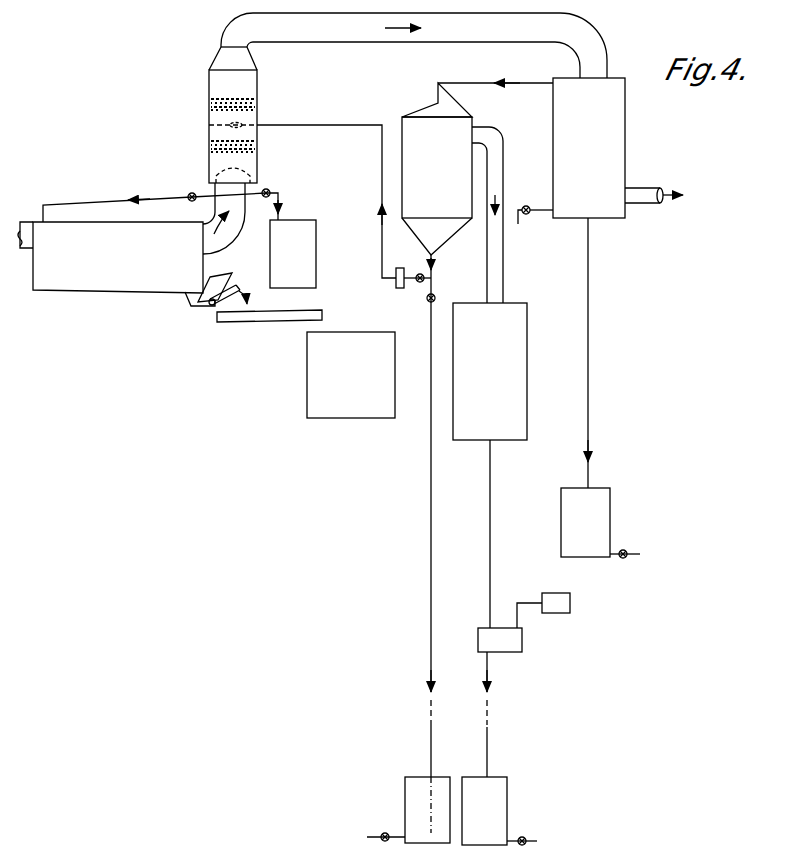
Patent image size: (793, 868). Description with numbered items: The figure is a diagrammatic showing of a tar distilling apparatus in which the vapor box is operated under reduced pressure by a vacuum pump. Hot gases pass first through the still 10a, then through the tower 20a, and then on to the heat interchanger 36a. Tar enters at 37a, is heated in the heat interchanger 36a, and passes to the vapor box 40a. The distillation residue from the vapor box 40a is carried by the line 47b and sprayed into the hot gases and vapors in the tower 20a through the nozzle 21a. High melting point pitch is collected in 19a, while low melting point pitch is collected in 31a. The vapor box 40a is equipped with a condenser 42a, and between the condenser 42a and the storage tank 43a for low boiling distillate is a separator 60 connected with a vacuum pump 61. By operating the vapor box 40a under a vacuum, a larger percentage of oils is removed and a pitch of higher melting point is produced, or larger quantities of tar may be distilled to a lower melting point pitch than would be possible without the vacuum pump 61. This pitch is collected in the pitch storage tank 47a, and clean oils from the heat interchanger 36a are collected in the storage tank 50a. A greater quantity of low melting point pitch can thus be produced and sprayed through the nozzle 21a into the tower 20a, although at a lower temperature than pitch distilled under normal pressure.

The still 10a is at (78, 284).
The high melting point pitch collector 19a is at (307, 368).
The tower 20a is at (207, 82).
The nozzle 21a is at (209, 125).
The low melting point pitch collector 31a is at (315, 210).
The heat interchanger 36a is at (626, 138).
The tar inlet 37a is at (529, 229).
The vapor box 40a is at (405, 122).
The condenser 42a is at (528, 381).
The storage tank for low boiling distillate 43a is at (506, 797).
The pitch storage tank 47a is at (406, 790).
The conduit 47b is at (432, 506).
The storage tank 50a is at (611, 511).
The separator 60 is at (478, 632).
The vacuum pump 61 is at (571, 597).